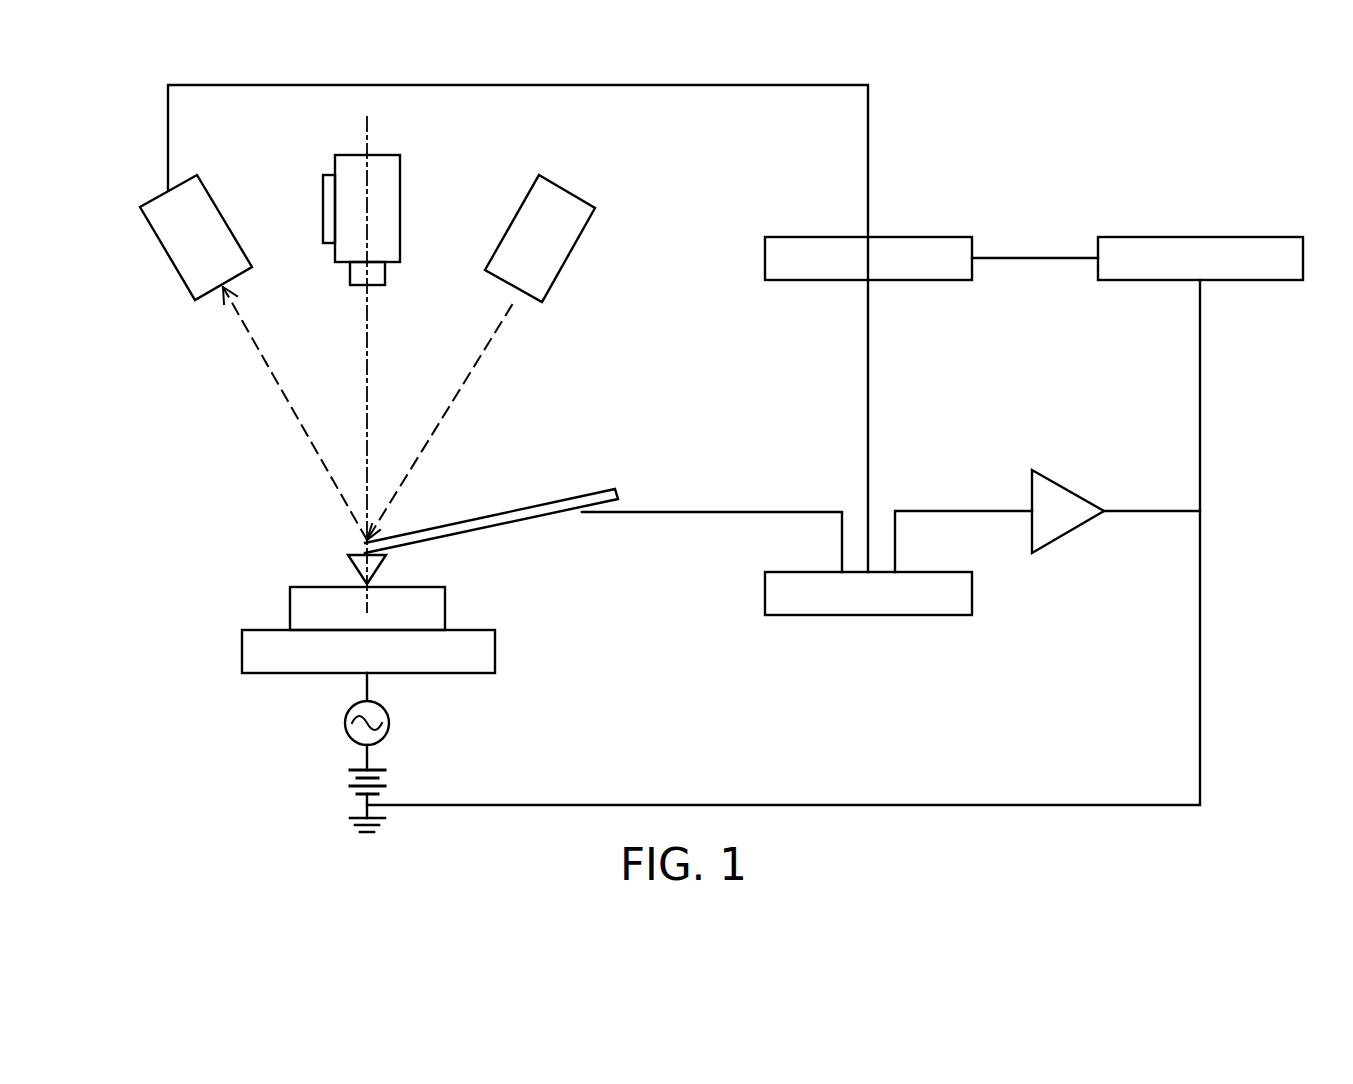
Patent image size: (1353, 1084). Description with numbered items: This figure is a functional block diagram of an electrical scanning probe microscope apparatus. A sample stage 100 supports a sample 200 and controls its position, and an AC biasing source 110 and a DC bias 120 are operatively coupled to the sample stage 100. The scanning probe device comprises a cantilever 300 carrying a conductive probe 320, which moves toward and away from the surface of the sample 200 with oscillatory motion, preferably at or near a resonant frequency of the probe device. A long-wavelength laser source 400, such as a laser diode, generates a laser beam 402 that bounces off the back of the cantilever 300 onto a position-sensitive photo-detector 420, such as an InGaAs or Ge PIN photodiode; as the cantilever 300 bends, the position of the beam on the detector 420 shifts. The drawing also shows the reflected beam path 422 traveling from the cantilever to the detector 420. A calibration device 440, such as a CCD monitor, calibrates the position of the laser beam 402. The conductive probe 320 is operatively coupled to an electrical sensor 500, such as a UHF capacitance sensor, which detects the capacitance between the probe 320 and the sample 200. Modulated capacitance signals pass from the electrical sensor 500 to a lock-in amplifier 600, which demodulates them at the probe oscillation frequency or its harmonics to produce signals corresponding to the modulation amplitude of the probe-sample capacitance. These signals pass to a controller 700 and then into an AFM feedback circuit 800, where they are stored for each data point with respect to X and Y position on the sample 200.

The sample stage 100 is at (497, 648).
The AC biasing source 110 is at (390, 723).
The DC bias 120 is at (392, 780).
The sample 200 is at (448, 605).
The cantilever 300 is at (490, 522).
The conductive probe 320 is at (349, 560).
The laser source 400 is at (565, 205).
The laser beam 402 is at (447, 398).
The position-sensitive photo-detector 420 is at (170, 243).
The reflected light beam 422 is at (290, 395).
The calibration device 440 is at (390, 166).
The electrical sensor 500 is at (778, 572).
The lock-in amplifier 600 is at (1068, 487).
The controller 700 is at (1110, 237).
The AFM feedback circuit 800 is at (777, 237).